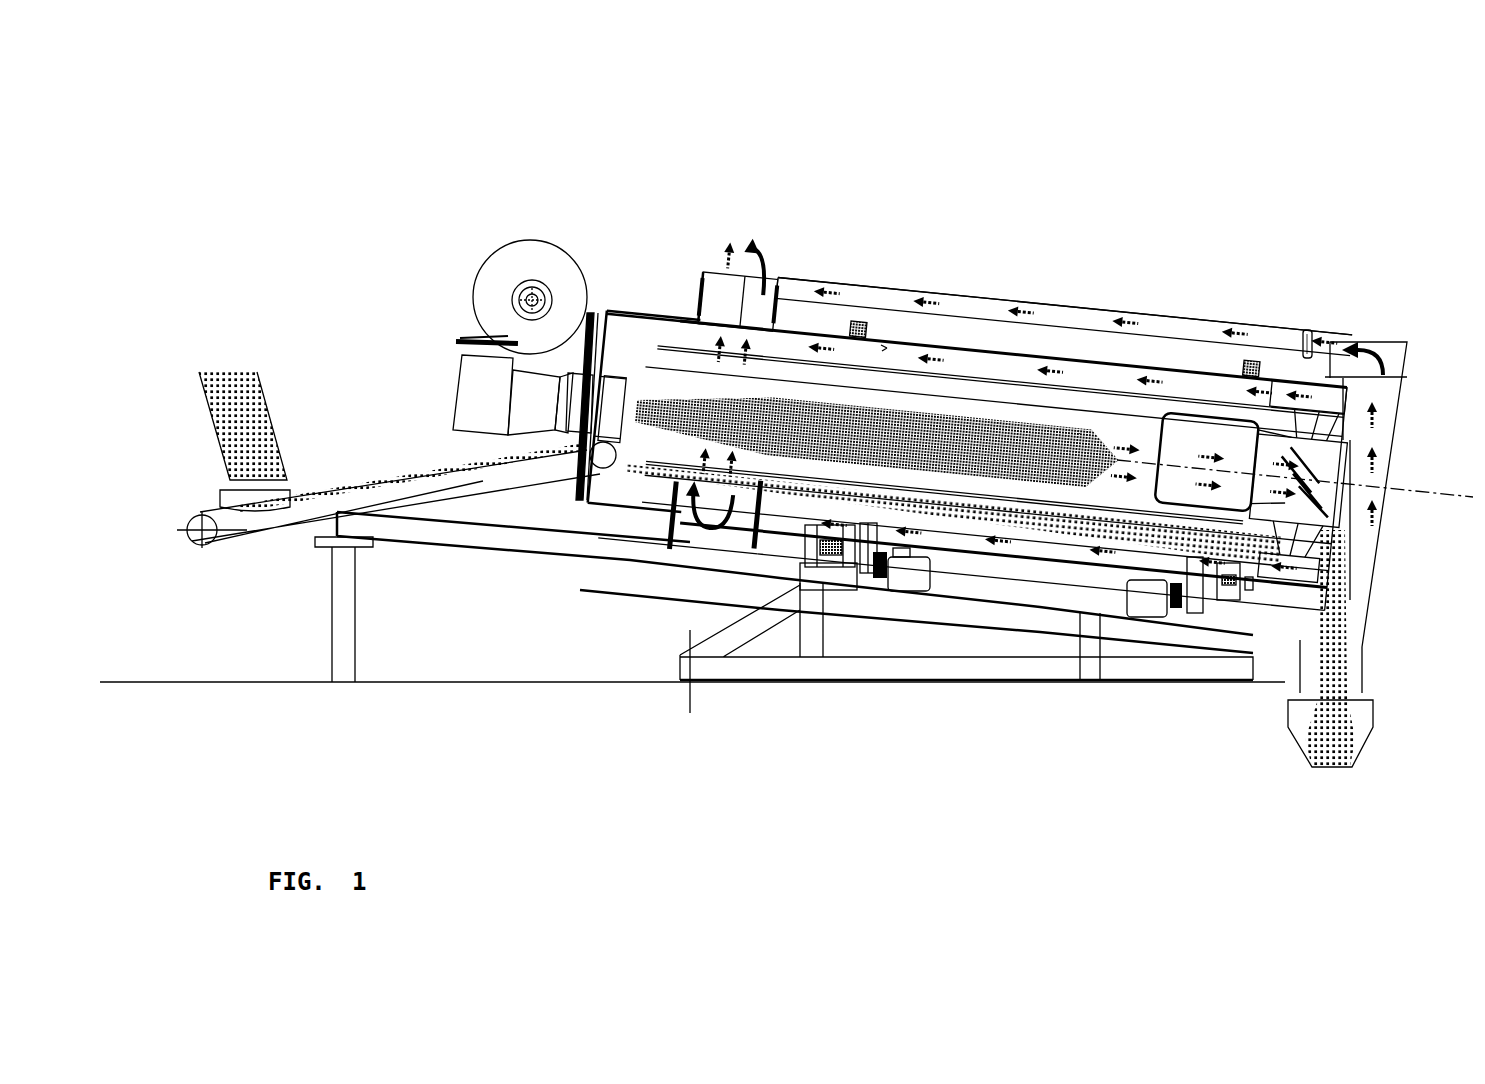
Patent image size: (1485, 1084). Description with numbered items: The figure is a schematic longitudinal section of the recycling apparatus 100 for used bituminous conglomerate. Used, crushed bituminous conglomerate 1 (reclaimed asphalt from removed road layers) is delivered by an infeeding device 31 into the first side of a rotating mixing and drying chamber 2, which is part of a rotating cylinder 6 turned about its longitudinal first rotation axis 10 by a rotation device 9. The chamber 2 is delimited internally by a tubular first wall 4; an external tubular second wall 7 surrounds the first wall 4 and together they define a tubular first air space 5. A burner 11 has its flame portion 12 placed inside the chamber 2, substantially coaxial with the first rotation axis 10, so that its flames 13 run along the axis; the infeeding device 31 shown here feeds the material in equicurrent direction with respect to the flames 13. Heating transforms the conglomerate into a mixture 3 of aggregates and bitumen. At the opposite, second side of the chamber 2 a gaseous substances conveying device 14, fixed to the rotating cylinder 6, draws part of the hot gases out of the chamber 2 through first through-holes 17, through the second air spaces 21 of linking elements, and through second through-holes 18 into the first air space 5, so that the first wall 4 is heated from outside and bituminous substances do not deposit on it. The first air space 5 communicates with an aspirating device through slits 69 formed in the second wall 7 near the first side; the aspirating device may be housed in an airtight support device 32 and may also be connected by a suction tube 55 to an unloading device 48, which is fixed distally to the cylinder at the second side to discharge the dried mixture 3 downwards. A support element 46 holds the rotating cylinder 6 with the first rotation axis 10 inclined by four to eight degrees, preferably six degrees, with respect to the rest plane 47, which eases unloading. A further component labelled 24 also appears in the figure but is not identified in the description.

The recycling apparatus 100 is at (285, 258).
The bituminous conglomerate 1 is at (238, 407).
The infeeding device 31 is at (182, 480).
The burner 11 is at (441, 325).
The flame portion 12 is at (608, 312).
The rotating cylinder 6 is at (684, 408).
The airtight support device 32 is at (737, 300).
The flames 13 is at (792, 392).
The second through-holes 18 is at (887, 348).
The first air space 5 is at (952, 514).
The first wall 4 is at (1064, 317).
The suction tube 55 is at (1065, 306).
The second wall 7 is at (993, 458).
The mixing and drying chamber 2 is at (983, 477).
The drum end cover 24 is at (1224, 463).
The gaseous substances conveying device 14 is at (1298, 481).
The first rotation axis 10 is at (1413, 495).
The second air space 21 is at (1310, 483).
The unloading device 48 is at (1350, 605).
The mixture 3 is at (1328, 730).
The first through-holes 17 is at (1118, 527).
The rotation device 9 is at (880, 560).
The support element 46 is at (763, 668).
The rest plane 47 is at (400, 683).
The slits 69 is at (612, 409).